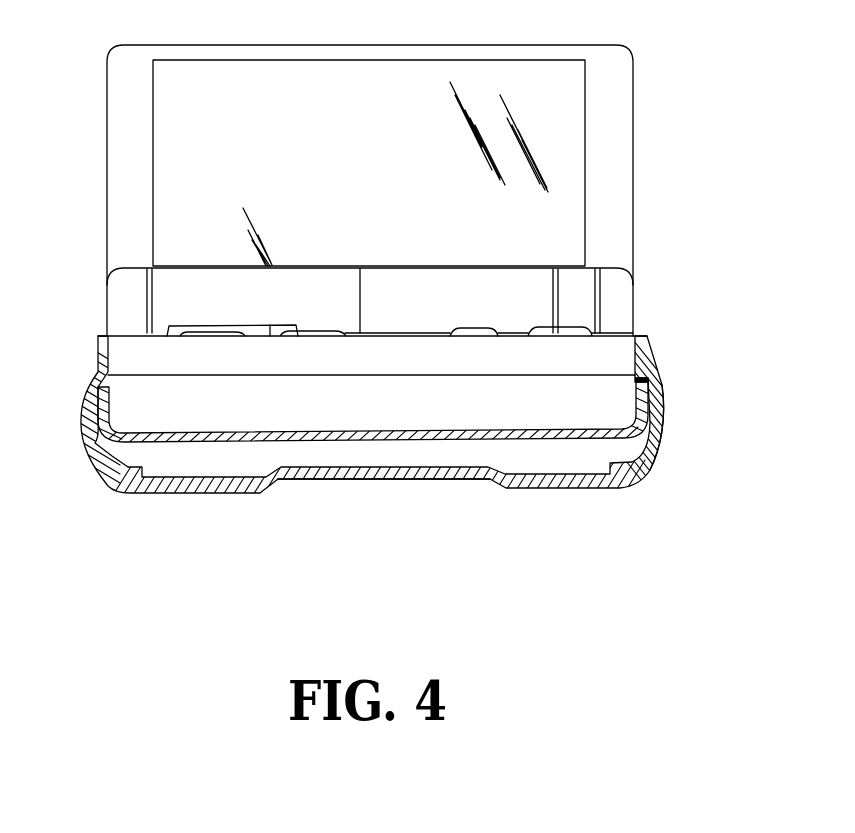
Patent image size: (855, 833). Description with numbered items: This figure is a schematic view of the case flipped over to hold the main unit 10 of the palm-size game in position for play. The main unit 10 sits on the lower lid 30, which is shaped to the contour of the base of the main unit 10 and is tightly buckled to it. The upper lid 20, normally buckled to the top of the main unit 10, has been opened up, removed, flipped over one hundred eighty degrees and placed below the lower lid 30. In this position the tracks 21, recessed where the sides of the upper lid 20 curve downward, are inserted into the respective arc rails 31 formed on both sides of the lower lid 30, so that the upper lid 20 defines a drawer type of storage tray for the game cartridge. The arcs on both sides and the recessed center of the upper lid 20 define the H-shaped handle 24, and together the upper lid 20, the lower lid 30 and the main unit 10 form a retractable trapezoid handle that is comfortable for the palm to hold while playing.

The main unit 10 is at (623, 158).
The upper lid 20 is at (395, 478).
The track 21 is at (652, 437).
The H-shaped handle 24 is at (305, 503).
The lower lid 30 is at (515, 440).
The arc rail 31 is at (650, 395).